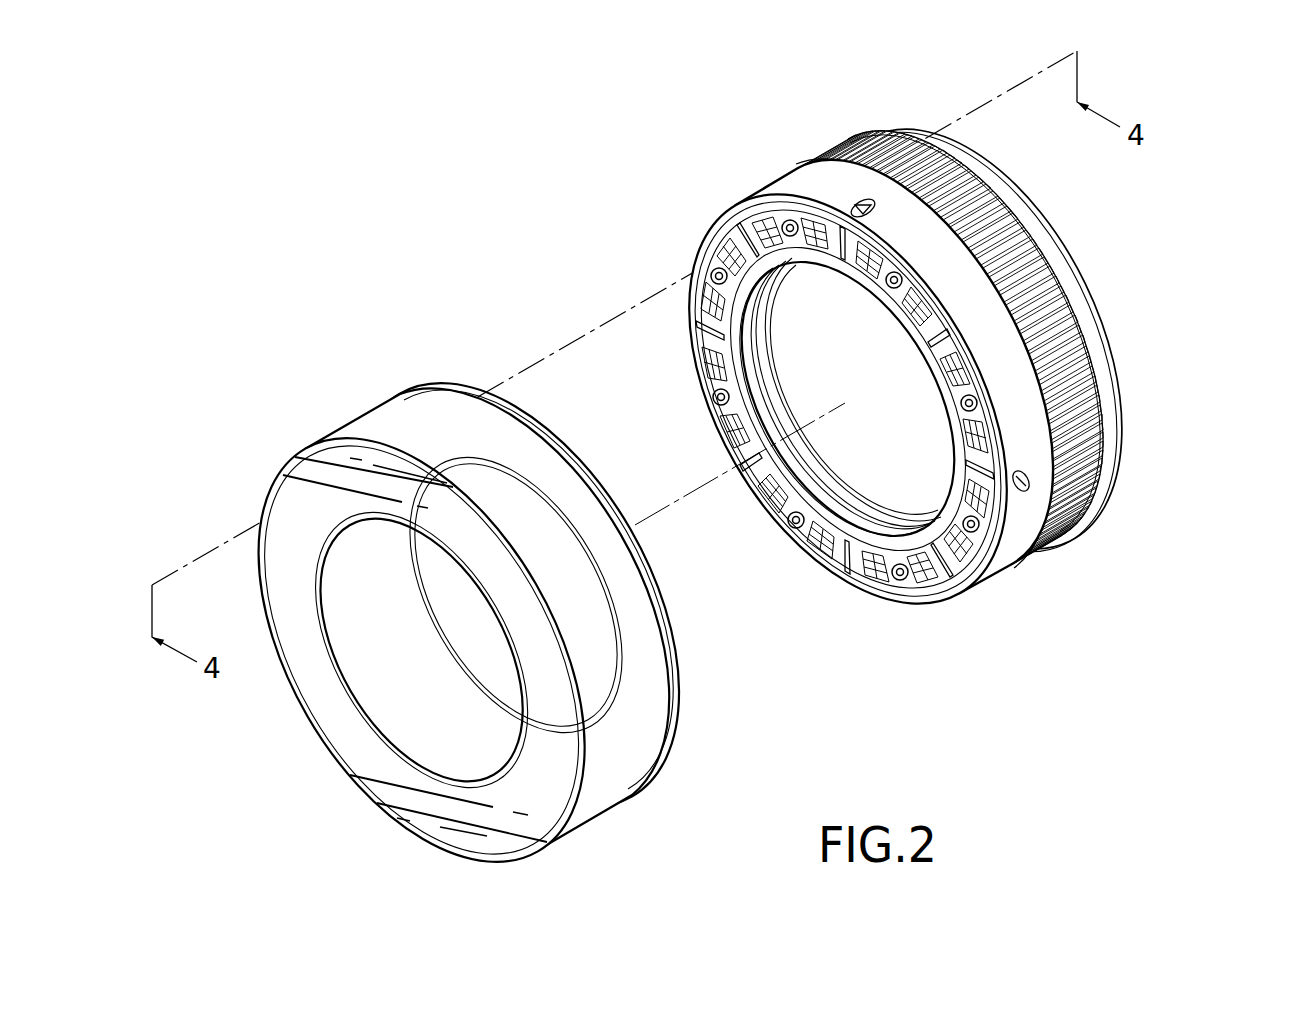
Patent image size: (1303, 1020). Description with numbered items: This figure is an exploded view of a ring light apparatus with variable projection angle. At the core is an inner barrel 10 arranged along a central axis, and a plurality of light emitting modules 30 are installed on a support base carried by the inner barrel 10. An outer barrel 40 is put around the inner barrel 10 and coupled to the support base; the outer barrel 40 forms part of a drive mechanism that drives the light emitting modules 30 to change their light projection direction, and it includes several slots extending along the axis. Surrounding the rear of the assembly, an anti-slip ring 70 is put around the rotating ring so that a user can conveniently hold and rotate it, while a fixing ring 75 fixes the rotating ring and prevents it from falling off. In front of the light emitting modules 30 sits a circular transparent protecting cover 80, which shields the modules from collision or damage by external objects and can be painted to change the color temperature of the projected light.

The inner barrel 10 is at (822, 553).
The light emitting modules 30 is at (867, 473).
The outer barrel 40 is at (1018, 533).
The anti-slip ring 70 is at (1083, 503).
The fixing ring 75 is at (1113, 404).
The protecting cover 80 is at (643, 720).